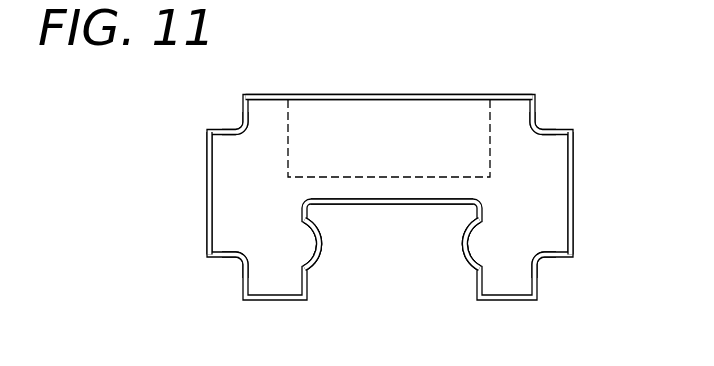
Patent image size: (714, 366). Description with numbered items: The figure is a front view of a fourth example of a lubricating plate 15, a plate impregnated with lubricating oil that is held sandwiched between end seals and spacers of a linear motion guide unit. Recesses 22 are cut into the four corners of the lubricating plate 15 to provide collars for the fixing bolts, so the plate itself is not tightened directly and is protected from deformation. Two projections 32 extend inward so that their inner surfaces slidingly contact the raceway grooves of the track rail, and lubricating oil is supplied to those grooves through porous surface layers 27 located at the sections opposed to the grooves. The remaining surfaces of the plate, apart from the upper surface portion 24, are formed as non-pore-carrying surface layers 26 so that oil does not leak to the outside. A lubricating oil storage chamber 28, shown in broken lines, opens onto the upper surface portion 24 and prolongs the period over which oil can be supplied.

The lubricating plate 15 is at (516, 96).
The recess 22 is at (240, 124).
The upper surface portion 24 is at (313, 95).
The non-pore-carrying surface layer 26 is at (207, 181).
The porous surface layer 27 is at (316, 254).
The lubricating oil storage chamber 28 is at (490, 128).
The projection 32 is at (308, 248).